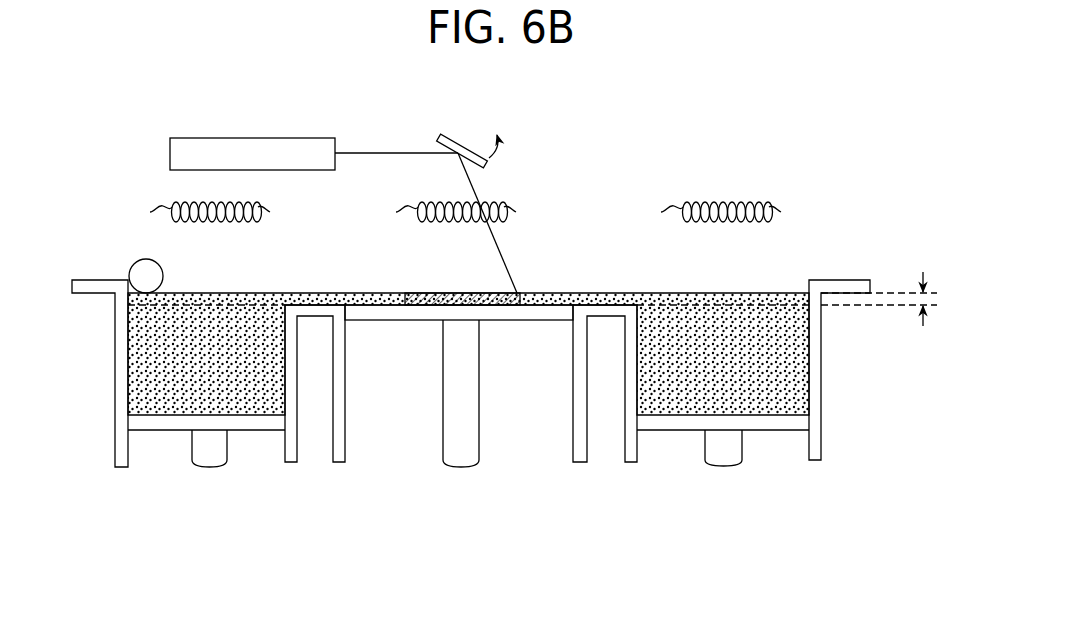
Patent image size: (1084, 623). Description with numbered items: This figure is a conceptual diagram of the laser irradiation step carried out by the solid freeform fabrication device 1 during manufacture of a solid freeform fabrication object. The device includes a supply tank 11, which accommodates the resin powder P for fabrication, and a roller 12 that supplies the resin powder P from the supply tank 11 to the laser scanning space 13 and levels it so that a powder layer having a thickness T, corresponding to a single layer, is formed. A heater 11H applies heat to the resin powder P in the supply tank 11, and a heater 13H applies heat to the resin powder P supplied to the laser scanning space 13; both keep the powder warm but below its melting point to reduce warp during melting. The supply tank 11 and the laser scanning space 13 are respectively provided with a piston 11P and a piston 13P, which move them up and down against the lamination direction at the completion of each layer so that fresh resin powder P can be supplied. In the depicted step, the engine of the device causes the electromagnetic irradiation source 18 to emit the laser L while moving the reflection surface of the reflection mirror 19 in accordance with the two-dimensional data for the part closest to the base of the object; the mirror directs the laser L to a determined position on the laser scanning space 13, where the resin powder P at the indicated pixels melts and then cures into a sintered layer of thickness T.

The solid freeform fabrication device 1 is at (916, 119).
The supply tank 11 is at (263, 270).
The heater 11H is at (161, 210).
The piston 11P is at (229, 464).
The roller 12 is at (149, 259).
The laser scanning space 13 is at (541, 265).
The heater 13H is at (408, 210).
The piston 13P is at (481, 464).
The electromagnetic irradiation source 18 is at (299, 137).
The reflection mirror 19 is at (466, 141).
The laser L is at (383, 150).
The resin powder P is at (750, 292).
The thickness T is at (890, 299).